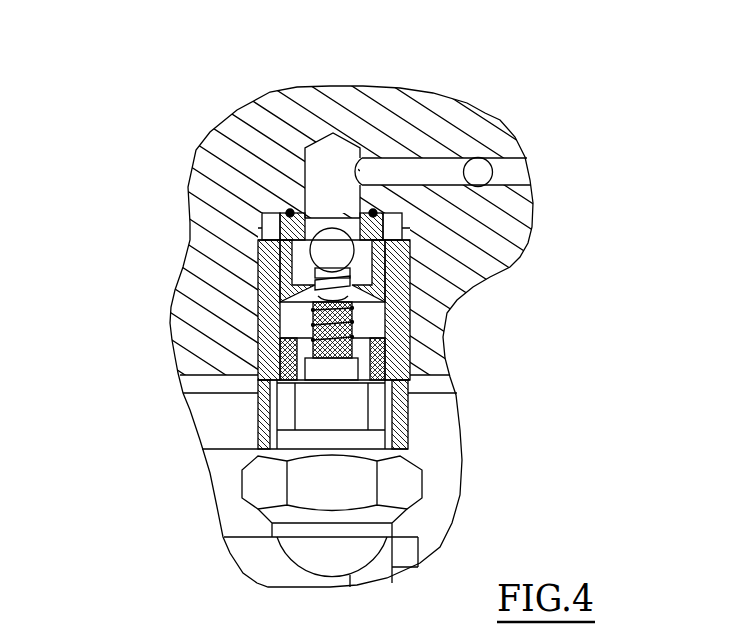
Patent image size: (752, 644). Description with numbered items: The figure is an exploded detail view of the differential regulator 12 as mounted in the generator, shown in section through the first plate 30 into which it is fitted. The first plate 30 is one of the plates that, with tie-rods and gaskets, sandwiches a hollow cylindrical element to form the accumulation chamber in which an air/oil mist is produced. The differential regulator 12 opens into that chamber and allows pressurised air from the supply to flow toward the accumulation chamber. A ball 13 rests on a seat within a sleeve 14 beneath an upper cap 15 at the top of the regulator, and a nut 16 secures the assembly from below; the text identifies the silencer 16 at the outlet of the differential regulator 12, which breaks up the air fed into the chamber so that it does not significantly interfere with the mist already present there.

The differential regulator 12 is at (500, 97).
The ball 13 is at (327, 253).
The valve cartridge sleeve 14 is at (258, 312).
The valve seat cap 15 is at (326, 212).
The silencer 16 is at (338, 480).
The first plate 30 is at (301, 104).